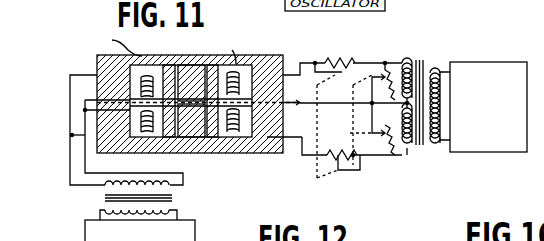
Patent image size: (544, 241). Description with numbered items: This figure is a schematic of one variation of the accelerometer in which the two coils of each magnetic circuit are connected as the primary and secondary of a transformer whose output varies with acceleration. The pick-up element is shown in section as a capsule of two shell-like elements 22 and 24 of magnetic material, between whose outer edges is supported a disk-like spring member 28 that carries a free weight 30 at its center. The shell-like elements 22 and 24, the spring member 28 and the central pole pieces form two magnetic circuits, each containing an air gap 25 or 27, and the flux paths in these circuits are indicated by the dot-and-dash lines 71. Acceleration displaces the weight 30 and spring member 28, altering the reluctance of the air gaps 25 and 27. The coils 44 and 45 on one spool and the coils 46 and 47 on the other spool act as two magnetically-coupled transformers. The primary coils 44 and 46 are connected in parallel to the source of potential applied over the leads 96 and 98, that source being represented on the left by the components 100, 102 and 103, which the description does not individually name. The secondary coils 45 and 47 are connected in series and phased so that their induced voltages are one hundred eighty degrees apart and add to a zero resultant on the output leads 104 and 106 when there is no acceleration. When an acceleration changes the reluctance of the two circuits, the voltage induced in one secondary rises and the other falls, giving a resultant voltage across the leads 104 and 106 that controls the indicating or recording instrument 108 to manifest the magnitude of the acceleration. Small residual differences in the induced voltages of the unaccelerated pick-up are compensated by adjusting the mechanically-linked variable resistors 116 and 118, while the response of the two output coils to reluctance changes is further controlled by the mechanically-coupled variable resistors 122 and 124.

The shell-like element 22 is at (97, 63).
The shell-like element 24 is at (238, 150).
The air gap 25 is at (184, 65).
The air gap 27 is at (214, 138).
The spring member 28 is at (278, 150).
The free weight 30 is at (190, 138).
The primary coil 44 is at (147, 77).
The secondary coil 45 is at (244, 70).
The primary coil 46 is at (165, 140).
The secondary coil 47 is at (242, 140).
The flux path lines 71 is at (167, 48).
The input lead 96 is at (70, 141).
The input lead 98 is at (87, 167).
The transformer primary 100 is at (105, 188).
The transformer secondary 102 is at (180, 206).
The oscillator 103 is at (196, 232).
The output lead 104 is at (435, 67).
The output lead 106 is at (435, 142).
The indicating or recording instrument 108 is at (482, 62).
The variable resistor 116 is at (400, 63).
The variable resistor 118 is at (398, 152).
The variable resistor 122 is at (346, 46).
The variable resistor 124 is at (334, 154).